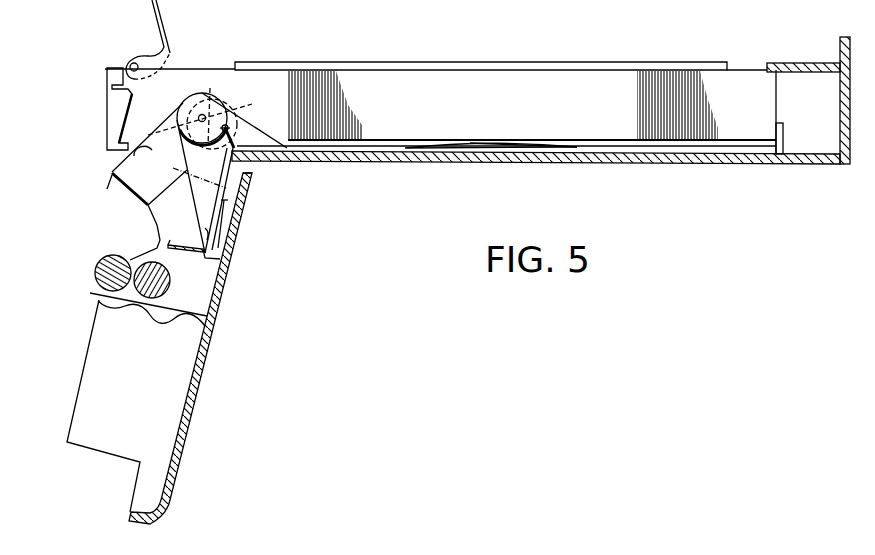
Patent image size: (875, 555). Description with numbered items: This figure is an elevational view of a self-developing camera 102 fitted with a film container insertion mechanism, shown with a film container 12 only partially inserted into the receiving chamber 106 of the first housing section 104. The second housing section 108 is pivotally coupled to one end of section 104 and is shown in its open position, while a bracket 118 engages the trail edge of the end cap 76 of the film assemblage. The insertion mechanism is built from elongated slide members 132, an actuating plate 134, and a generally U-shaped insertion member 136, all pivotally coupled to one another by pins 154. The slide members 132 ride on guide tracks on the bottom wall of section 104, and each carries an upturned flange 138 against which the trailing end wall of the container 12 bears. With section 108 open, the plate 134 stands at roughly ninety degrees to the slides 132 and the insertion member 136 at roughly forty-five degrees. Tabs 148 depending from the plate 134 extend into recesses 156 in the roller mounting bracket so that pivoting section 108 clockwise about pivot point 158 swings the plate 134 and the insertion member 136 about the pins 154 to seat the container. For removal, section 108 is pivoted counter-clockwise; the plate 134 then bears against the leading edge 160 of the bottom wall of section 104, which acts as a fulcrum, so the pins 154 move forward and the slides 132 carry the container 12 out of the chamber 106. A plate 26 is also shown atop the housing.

The film container 12 is at (643, 130).
The top plate 26 is at (345, 62).
The end cap 76 is at (108, 72).
The self-developing camera 102 is at (629, 142).
The first housing section 104 is at (604, 174).
The chamber 106 is at (755, 147).
The second housing section 108 is at (194, 437).
The bracket 118 is at (161, 18).
The slide member 132 is at (493, 151).
The actuating plate 134 is at (232, 184).
The insertion member 136 is at (118, 192).
The upturned flange 138 is at (780, 130).
The tab 148 is at (205, 228).
The pin 154 is at (207, 89).
The recess 156 is at (204, 257).
The pivot point 158 is at (228, 126).
The leading edge 160 is at (247, 171).